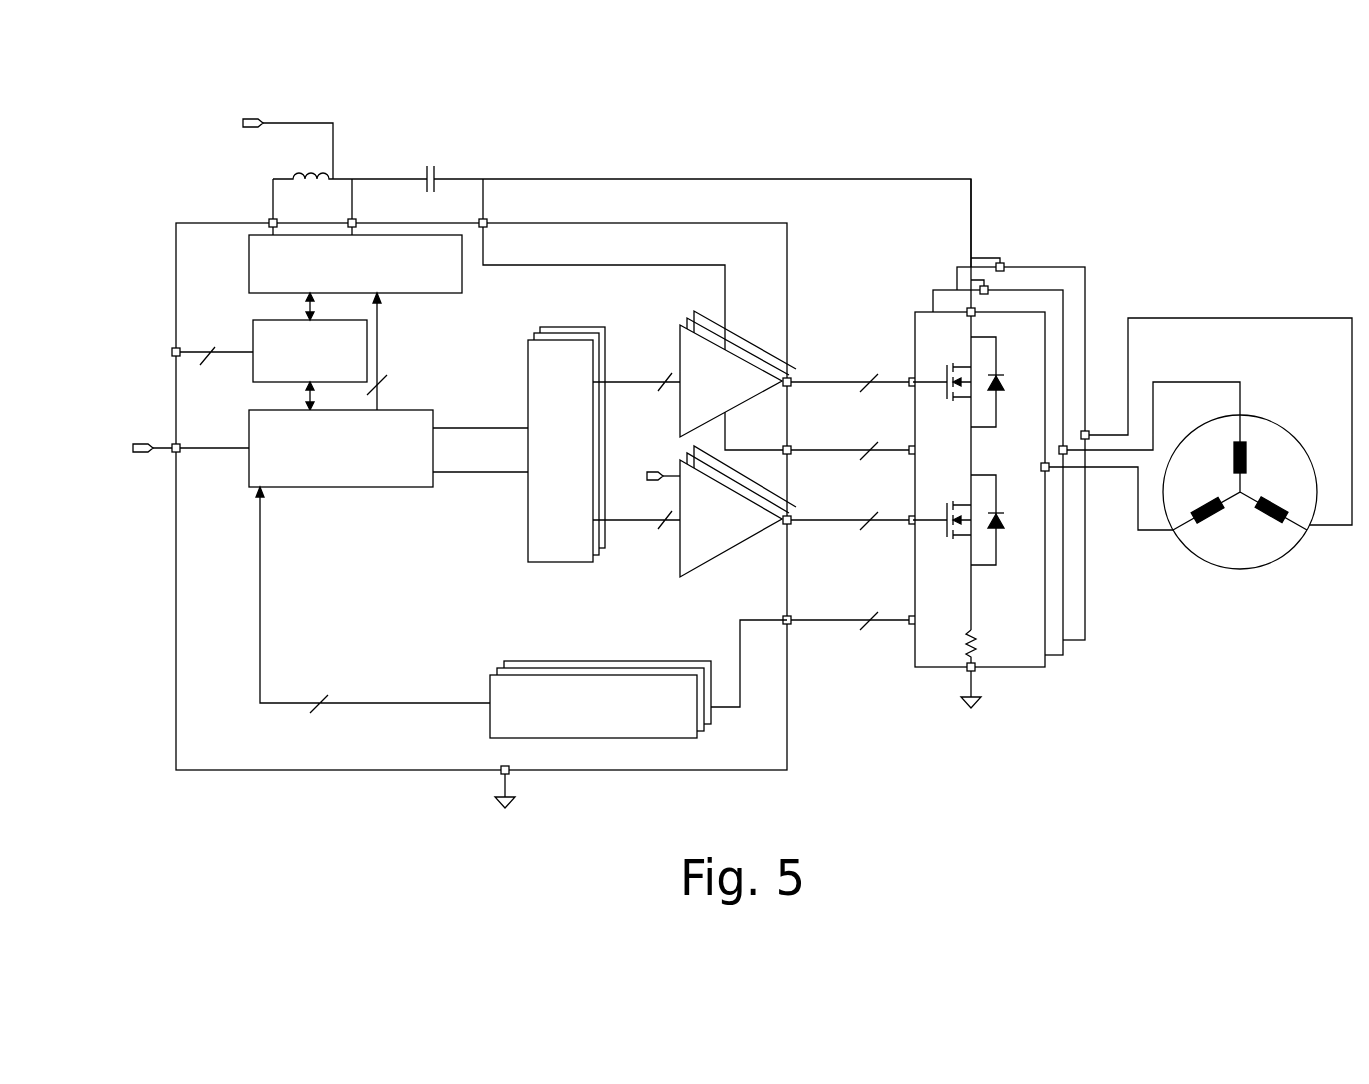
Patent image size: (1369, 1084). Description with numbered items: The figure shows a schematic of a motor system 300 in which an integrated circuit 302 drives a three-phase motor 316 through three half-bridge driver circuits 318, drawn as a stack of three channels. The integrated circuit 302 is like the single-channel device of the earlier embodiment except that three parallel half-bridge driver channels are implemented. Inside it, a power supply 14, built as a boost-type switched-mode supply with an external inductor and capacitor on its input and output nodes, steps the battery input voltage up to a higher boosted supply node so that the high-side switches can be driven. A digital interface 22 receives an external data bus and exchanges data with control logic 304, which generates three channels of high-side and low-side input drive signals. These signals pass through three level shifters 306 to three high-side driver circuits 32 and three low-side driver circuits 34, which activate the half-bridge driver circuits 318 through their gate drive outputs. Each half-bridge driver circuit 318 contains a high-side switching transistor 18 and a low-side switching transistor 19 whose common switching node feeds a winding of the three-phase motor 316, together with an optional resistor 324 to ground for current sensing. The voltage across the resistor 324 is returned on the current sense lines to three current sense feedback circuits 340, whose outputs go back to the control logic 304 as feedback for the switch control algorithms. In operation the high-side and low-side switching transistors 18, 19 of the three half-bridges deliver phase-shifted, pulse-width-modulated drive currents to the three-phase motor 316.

The motor system 300 is at (124, 194).
The integrated circuit 302 is at (567, 223).
The power supply 14 is at (484, 316).
The digital interface 22 is at (253, 372).
The control logic 304 is at (405, 487).
The level shifter 306 is at (578, 327).
The high-side driver circuit 32 is at (688, 318).
The low-side driver circuit 34 is at (688, 577).
The half-bridge driver circuit 318 is at (1042, 341).
The high-side switching transistor 18 is at (968, 365).
The low-side switching transistor 19 is at (968, 505).
The resistor 324 is at (976, 637).
The three-phase motor 316 is at (1258, 418).
The current sense feedback circuit 340 is at (608, 738).